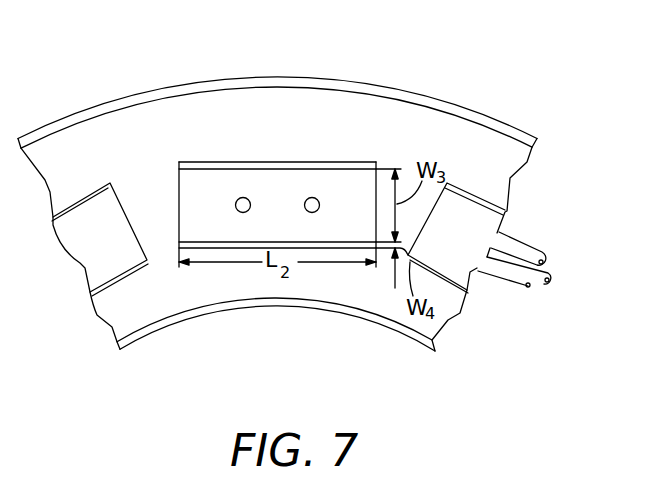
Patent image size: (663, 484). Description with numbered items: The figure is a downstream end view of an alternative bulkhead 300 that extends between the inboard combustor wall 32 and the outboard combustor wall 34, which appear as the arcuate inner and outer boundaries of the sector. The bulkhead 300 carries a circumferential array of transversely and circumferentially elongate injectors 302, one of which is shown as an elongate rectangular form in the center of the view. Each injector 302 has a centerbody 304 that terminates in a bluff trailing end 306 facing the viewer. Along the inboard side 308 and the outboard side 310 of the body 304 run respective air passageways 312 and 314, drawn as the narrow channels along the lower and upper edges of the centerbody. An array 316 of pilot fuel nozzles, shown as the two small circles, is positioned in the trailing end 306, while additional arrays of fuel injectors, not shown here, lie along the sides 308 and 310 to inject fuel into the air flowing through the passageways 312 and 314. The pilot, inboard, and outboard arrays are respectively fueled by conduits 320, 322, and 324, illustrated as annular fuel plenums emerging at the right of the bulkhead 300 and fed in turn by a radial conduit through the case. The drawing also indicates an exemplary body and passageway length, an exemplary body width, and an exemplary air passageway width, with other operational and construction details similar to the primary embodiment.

The bulkhead 300 is at (323, 250).
The injector 302 is at (304, 192).
The centerbody 304 is at (365, 198).
The bluff trailing end 306 is at (360, 180).
The inboard side 308 is at (352, 243).
The outboard side 310 is at (330, 162).
The air passageway 312 is at (320, 250).
The air passageway 314 is at (288, 163).
The array of pilot fuel nozzles 316 is at (235, 205).
The conduit 320 is at (547, 261).
The conduit 322 is at (519, 305).
The conduit 324 is at (527, 250).
The inboard combustor wall 32 is at (423, 348).
The outboard combustor wall 34 is at (512, 132).